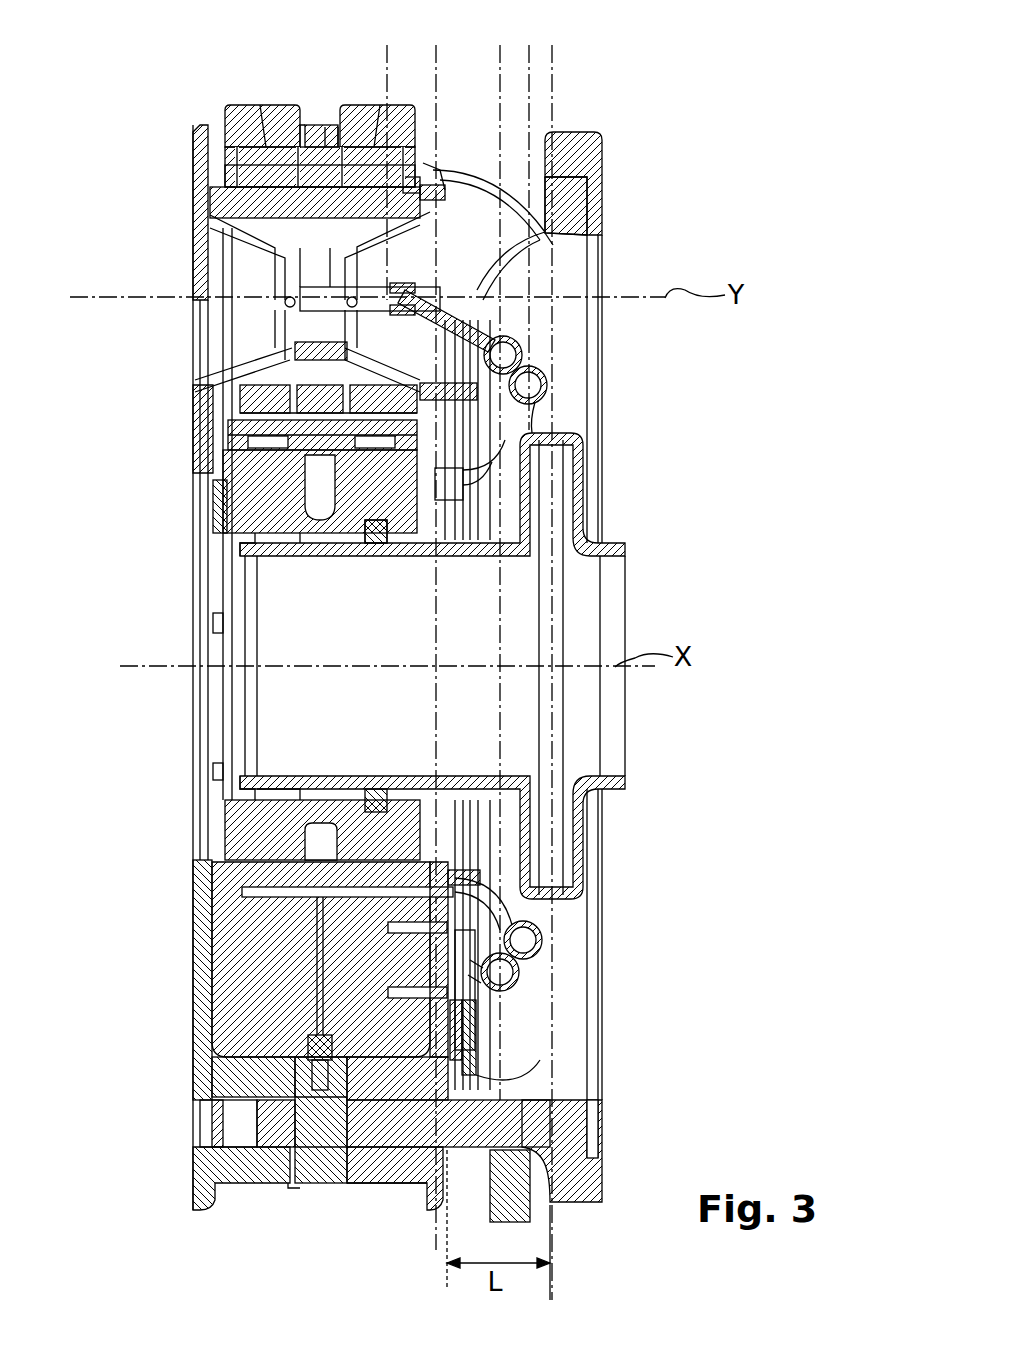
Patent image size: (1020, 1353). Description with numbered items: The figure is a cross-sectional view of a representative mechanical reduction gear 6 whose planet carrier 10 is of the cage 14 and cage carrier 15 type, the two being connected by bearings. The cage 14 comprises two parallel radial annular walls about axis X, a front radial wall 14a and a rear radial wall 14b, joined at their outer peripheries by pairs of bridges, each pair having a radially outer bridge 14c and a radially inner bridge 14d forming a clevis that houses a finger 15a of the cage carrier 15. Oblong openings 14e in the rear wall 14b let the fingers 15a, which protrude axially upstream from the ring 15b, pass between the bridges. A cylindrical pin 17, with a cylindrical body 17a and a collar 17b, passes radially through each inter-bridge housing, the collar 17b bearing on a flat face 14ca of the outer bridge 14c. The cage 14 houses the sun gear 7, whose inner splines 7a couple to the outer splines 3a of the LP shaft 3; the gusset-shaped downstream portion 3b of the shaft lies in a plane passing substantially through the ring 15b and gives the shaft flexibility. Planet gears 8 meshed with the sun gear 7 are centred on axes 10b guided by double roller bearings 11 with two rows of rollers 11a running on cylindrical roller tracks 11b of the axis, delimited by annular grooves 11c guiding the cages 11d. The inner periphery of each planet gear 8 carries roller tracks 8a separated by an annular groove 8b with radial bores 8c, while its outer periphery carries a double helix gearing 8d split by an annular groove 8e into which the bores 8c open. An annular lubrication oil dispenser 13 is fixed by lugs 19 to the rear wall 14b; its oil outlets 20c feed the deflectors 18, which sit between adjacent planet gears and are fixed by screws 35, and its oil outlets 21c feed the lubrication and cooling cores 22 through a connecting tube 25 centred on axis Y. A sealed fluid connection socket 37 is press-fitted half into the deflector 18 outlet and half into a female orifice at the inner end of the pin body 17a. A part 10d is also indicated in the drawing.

The LP shaft 3 is at (380, 780).
The outer splines 3a is at (317, 793).
The gusset-shaped downstream portion 3b is at (583, 505).
The reduction gear 6 is at (652, 180).
The sun gear 7 is at (232, 828).
The inner splines 7a is at (278, 666).
The planet gears 8 is at (216, 98).
The cylindrical roller tracks 8a is at (267, 105).
The annular groove 8b is at (331, 127).
The radial bores 8c is at (317, 133).
The double helix gearing 8d is at (230, 104).
The annular groove 8e is at (303, 130).
The planet carrier 10 is at (613, 127).
The axes 10b is at (225, 213).
The rotor flange 10d is at (548, 237).
The bearings 11 is at (215, 150).
The rollers 11a is at (251, 165).
The cylindrical roller tracks 11b is at (233, 175).
The annular grooves 11c is at (553, 233).
The cages 11d is at (423, 163).
The lubrication oil dispenser 13 is at (527, 353).
The cage 14 is at (408, 1187).
The front radial wall 14a is at (200, 990).
The rear radial wall 14b is at (490, 1030).
The radially outer bridge 14c is at (235, 1185).
The flat face 14ca is at (373, 1185).
The radially inner bridge 14d is at (200, 1075).
The oblong openings 14e is at (467, 1158).
The cage carrier 15 is at (599, 1204).
The finger 15a is at (240, 1112).
The ring 15b is at (573, 137).
The cylindrical pin 17 is at (316, 1186).
The cylindrical body 17a is at (330, 1155).
The collar 17b is at (290, 1185).
The deflectors 18 is at (225, 950).
The lugs 19 is at (480, 1020).
The oil outlets 20c is at (424, 557).
The oil outlets 21c is at (280, 308).
The lubrication and cooling cores 22 is at (226, 248).
The connecting tube 25 is at (545, 250).
The screws 35 is at (487, 915).
The sealed fluid connection socket 37 is at (303, 1045).